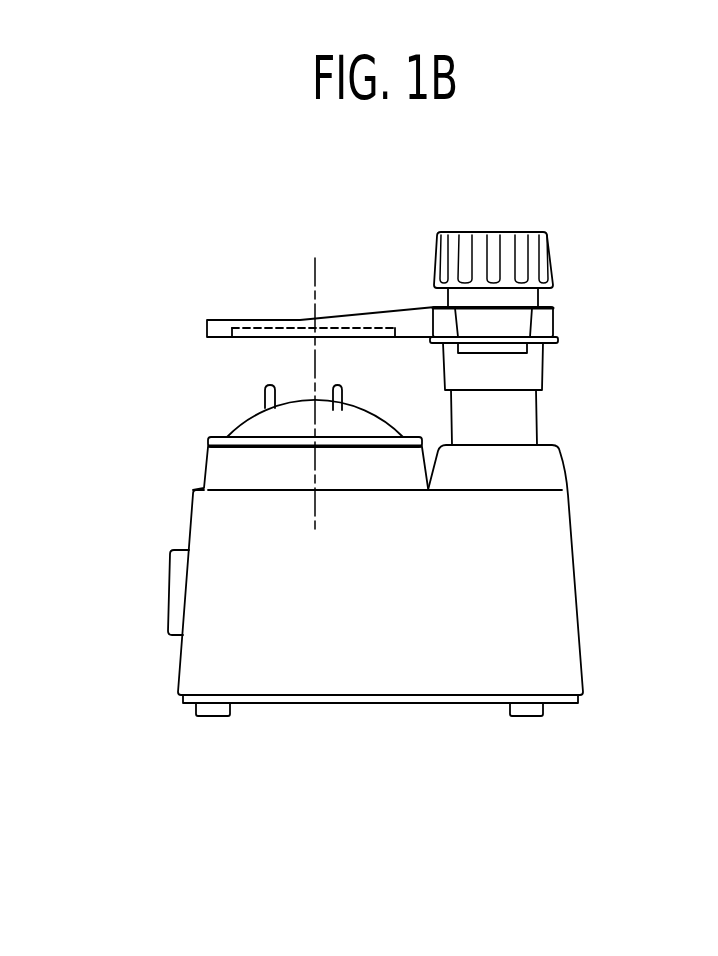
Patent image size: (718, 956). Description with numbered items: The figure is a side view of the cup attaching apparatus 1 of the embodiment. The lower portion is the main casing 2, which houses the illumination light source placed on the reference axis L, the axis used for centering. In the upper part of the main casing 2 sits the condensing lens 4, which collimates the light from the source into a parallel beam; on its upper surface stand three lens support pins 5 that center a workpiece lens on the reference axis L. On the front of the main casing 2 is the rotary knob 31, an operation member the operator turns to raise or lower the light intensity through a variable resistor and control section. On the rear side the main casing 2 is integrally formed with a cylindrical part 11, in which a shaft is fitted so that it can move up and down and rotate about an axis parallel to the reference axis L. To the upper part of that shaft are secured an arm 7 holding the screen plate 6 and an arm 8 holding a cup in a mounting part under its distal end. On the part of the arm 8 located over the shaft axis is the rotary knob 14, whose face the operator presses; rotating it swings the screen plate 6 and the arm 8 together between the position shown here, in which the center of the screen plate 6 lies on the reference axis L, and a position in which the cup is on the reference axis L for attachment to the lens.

The cup attaching apparatus 1 is at (650, 520).
The main casing 2 is at (205, 527).
The rotary knob 31 is at (177, 598).
The condensing lens 4 is at (253, 425).
The lens support pins 5 is at (343, 388).
The reference axis L is at (313, 365).
The screen plate 6 is at (245, 327).
The arm 7 is at (415, 316).
The arm 8 is at (546, 323).
The cylindrical part 11 is at (522, 418).
The rotary knob 14 is at (455, 240).